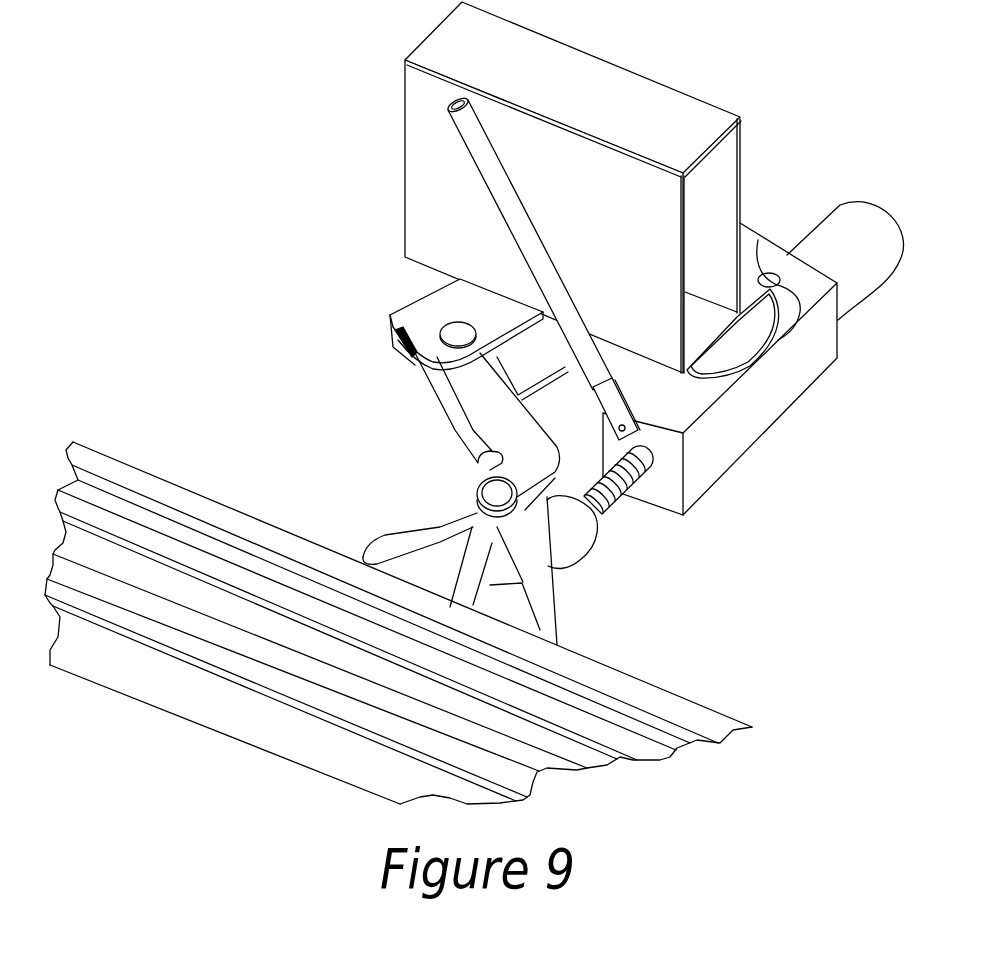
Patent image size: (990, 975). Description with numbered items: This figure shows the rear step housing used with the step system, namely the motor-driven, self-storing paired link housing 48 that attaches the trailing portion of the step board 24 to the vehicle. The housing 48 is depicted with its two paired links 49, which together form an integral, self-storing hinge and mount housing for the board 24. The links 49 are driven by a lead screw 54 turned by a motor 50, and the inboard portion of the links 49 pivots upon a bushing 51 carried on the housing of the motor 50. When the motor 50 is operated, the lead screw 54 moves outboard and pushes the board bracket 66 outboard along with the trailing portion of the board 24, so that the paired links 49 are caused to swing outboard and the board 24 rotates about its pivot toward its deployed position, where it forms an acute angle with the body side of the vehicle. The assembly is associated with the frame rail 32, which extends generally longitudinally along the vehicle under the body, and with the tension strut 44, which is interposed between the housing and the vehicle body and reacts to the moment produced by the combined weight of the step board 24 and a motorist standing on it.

The step board 24 is at (123, 475).
The frame rail 32 is at (430, 157).
The tension strut 44 is at (527, 242).
The paired link housing 48 is at (400, 298).
The paired links 49 is at (388, 323).
The motor 50 is at (822, 351).
The bushing 51 is at (757, 240).
The lead screw 54 is at (617, 507).
The board bracket 66 is at (407, 530).